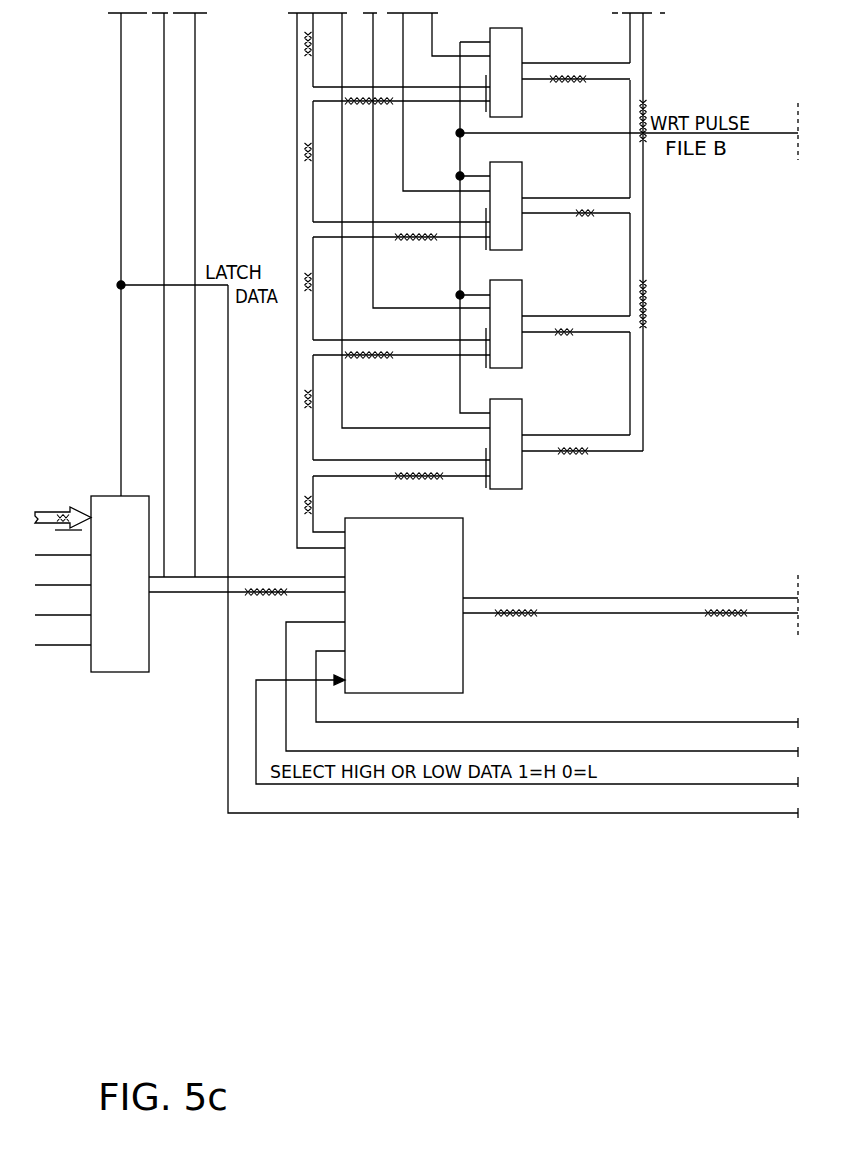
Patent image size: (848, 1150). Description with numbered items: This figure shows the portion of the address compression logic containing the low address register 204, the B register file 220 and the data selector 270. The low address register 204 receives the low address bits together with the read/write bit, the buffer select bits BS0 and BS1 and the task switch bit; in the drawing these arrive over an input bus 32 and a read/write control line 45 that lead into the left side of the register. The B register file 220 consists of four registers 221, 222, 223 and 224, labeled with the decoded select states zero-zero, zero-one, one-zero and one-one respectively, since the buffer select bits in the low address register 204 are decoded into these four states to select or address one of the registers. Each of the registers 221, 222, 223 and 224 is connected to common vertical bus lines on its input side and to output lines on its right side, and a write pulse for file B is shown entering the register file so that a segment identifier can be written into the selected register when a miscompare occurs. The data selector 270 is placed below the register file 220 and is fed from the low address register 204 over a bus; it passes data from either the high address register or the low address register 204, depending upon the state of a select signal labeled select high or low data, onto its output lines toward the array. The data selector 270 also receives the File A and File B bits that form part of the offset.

The data bus 32 is at (59, 507).
The read/write control line 45 is at (56, 540).
The low address register 204 is at (141, 496).
The B register file 220 is at (566, 245).
The register 221 is at (522, 108).
The register 222 is at (522, 177).
The register 223 is at (522, 293).
The register 224 is at (522, 413).
The data selector 270 is at (463, 527).